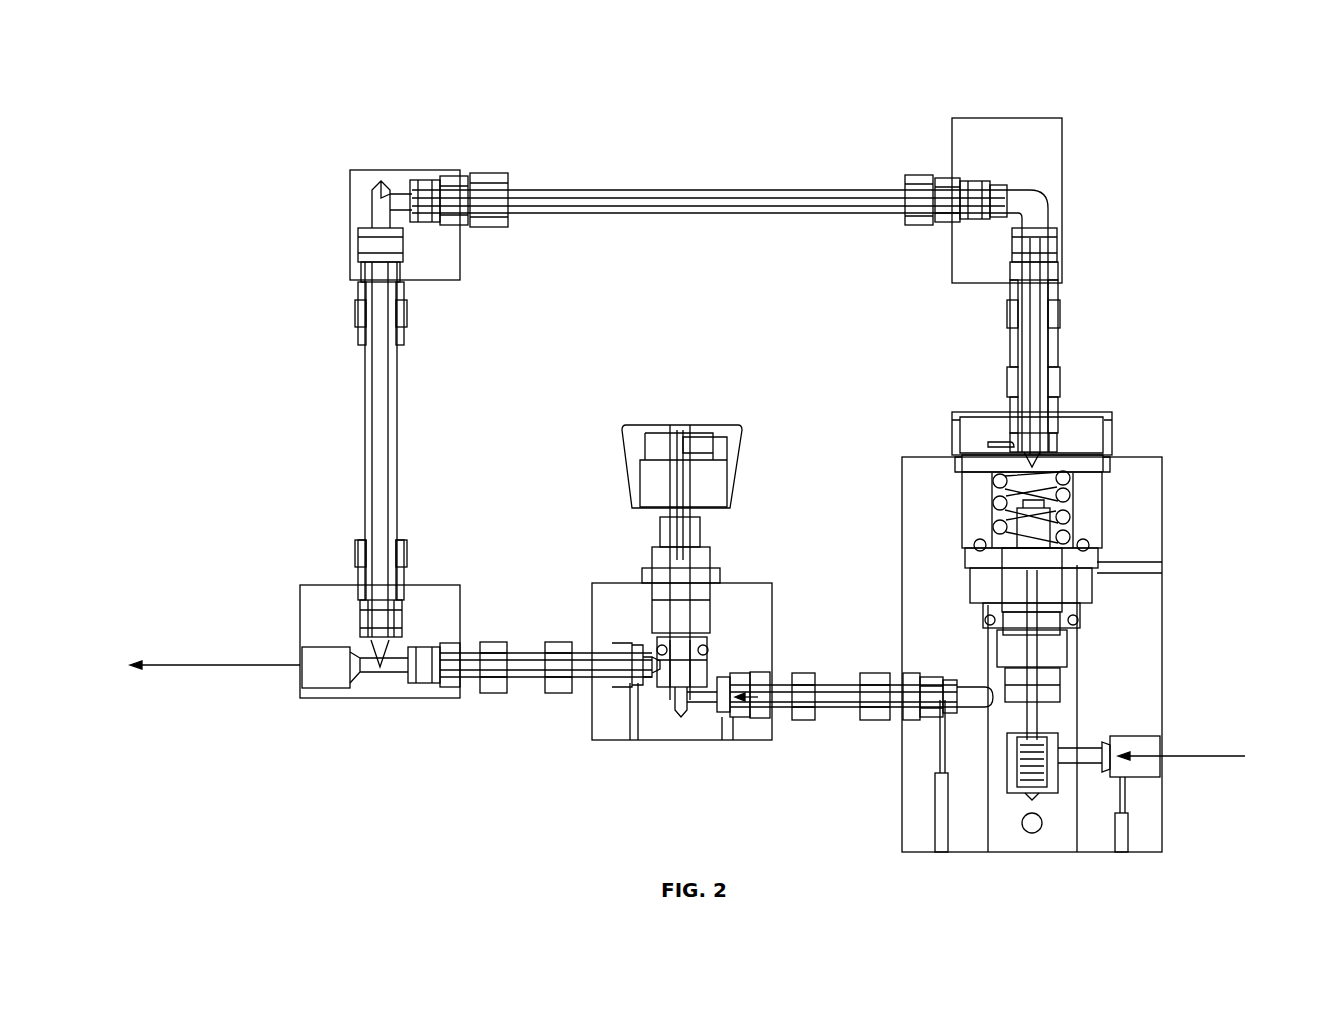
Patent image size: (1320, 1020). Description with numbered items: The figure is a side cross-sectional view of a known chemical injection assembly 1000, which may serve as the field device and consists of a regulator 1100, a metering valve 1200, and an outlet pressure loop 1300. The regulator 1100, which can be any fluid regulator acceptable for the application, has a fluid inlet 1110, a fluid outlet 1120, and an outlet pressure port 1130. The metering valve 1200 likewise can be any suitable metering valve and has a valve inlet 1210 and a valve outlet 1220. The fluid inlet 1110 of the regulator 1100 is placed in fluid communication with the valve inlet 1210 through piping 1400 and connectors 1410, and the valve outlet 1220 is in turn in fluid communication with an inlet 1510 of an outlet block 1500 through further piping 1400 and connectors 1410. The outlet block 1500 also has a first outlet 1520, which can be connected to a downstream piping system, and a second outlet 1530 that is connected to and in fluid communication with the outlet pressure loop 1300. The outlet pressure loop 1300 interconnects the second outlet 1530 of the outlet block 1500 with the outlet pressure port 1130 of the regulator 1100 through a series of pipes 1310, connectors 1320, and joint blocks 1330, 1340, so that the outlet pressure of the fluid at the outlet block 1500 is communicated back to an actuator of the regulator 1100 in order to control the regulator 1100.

The chemical injection assembly 1000 is at (274, 89).
The regulator 1100 is at (1243, 474).
The fluid inlet 1110 is at (1165, 760).
The fluid outlet 1120 is at (940, 678).
The outlet pressure port 1130 is at (1055, 422).
The metering valve 1200 is at (552, 464).
The valve inlet 1210 is at (705, 720).
The valve outlet 1220 is at (592, 740).
The outlet pressure loop 1300 is at (270, 248).
The pipes 1310 is at (640, 216).
The connectors 1320 is at (470, 175).
The joint block 1330 is at (378, 180).
The joint block 1340 is at (1068, 143).
The piping 1400 is at (525, 695).
The connectors 1410 is at (558, 640).
The outlet block 1500 is at (290, 708).
The inlet 1510 is at (420, 700).
The first outlet 1520 is at (300, 660).
The second outlet 1530 is at (315, 585).